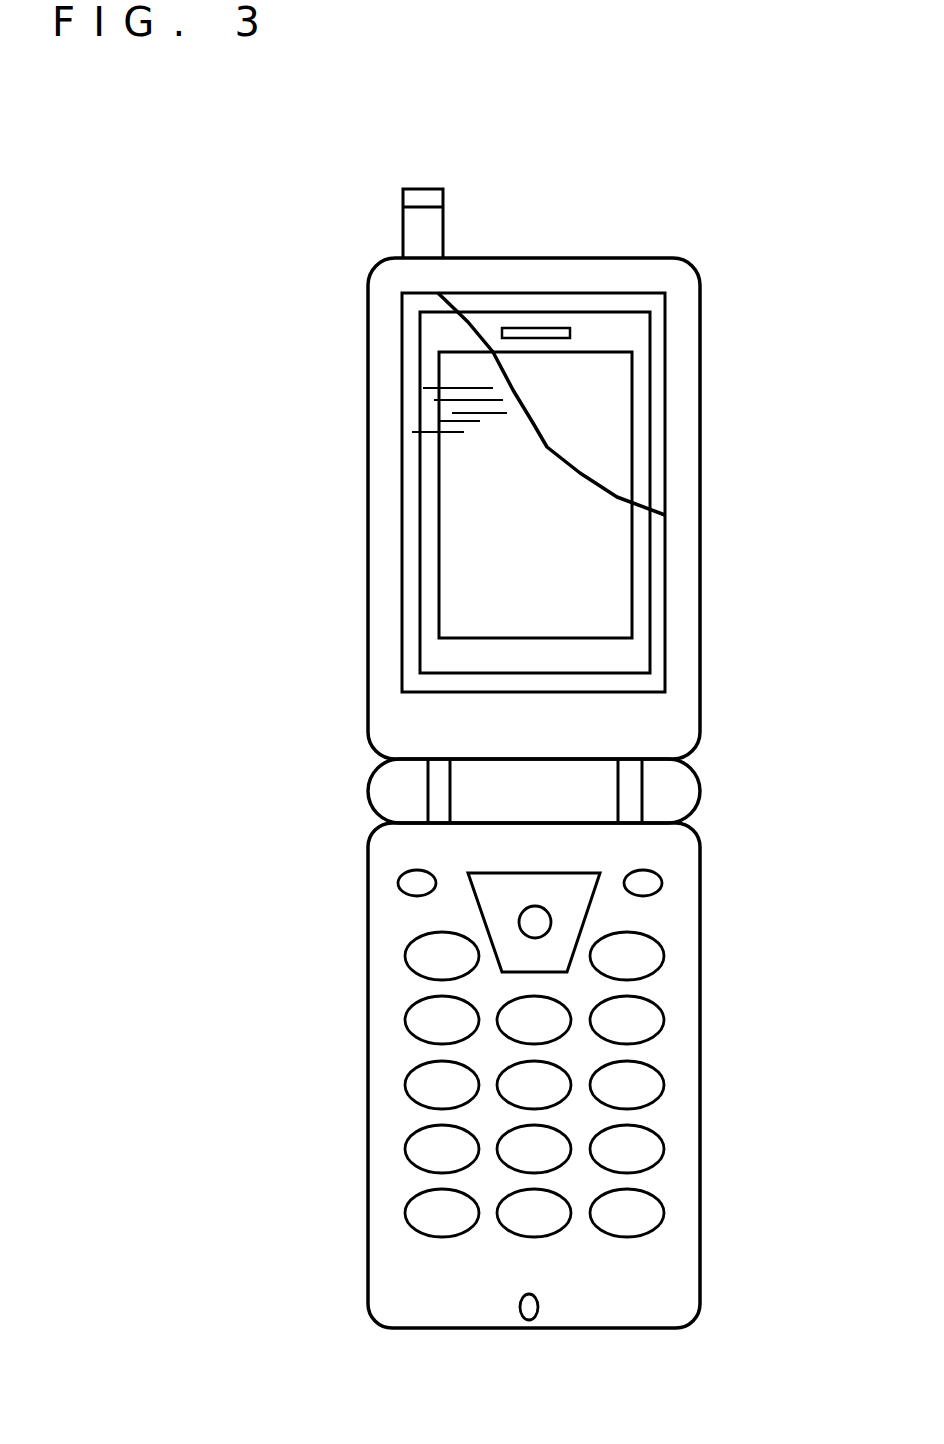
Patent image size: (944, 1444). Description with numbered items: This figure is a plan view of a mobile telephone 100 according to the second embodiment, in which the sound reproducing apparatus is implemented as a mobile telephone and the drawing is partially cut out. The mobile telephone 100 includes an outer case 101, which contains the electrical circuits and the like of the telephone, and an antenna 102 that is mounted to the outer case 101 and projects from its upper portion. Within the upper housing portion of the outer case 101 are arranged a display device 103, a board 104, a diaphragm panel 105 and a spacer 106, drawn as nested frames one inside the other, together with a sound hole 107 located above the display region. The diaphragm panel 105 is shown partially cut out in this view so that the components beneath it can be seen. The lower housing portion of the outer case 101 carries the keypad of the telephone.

The mobile telephone 100 is at (333, 260).
The outer case 101 is at (683, 738).
The antenna 102 is at (437, 213).
The display device 103 is at (633, 466).
The board 104 is at (613, 328).
The diaphragm panel 105 is at (488, 560).
The spacer 106 is at (623, 300).
The sound hole 107 is at (538, 328).